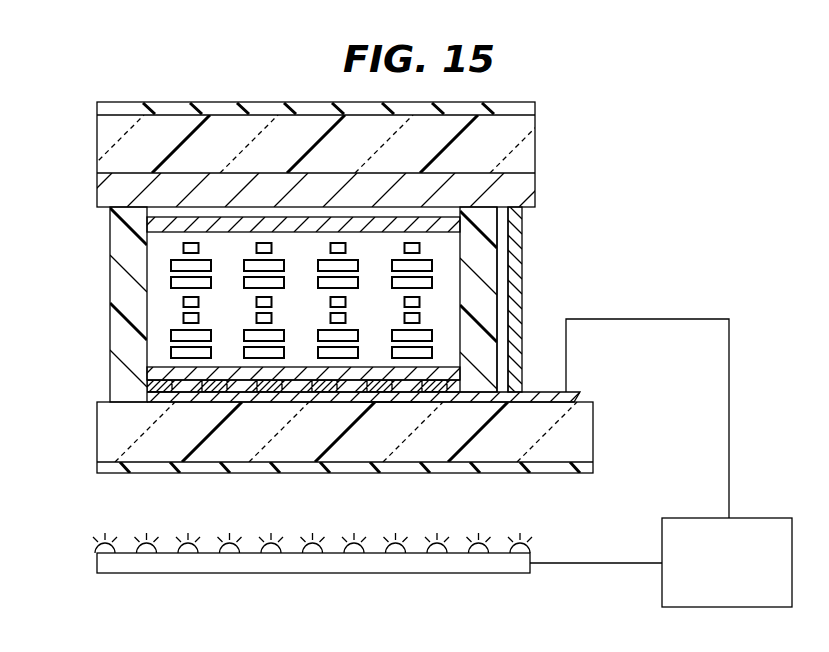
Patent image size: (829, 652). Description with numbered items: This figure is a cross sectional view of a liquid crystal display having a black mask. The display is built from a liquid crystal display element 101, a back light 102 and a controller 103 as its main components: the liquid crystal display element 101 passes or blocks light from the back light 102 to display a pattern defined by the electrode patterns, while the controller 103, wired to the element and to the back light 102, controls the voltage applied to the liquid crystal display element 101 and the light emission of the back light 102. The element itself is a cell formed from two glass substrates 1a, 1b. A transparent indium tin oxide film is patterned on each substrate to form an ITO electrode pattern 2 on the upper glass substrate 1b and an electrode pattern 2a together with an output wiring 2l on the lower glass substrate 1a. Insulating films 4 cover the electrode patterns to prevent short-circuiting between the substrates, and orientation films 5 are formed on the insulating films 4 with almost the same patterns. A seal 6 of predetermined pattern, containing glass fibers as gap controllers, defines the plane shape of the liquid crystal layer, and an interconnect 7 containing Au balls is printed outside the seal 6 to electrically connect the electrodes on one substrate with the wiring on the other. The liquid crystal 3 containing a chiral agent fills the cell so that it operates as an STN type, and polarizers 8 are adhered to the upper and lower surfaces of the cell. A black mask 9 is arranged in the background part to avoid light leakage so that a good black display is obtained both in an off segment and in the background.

The liquid crystal display element 101 is at (87, 105).
The polarizer 8 is at (537, 106).
The glass substrate 1b is at (535, 143).
The ITO electrode pattern 2 is at (535, 194).
The insulating film 4 is at (460, 213).
The orientation film 5 is at (460, 226).
The seal 6 is at (497, 293).
The interconnect 7 is at (522, 316).
The liquid crystal 3 is at (433, 353).
The output wiring 2l is at (595, 393).
The glass substrate 1a is at (593, 438).
The black mask 9 is at (147, 385).
The ITO electrode pattern 2a is at (388, 403).
The back light 102 is at (96, 562).
The controller 103 is at (662, 605).